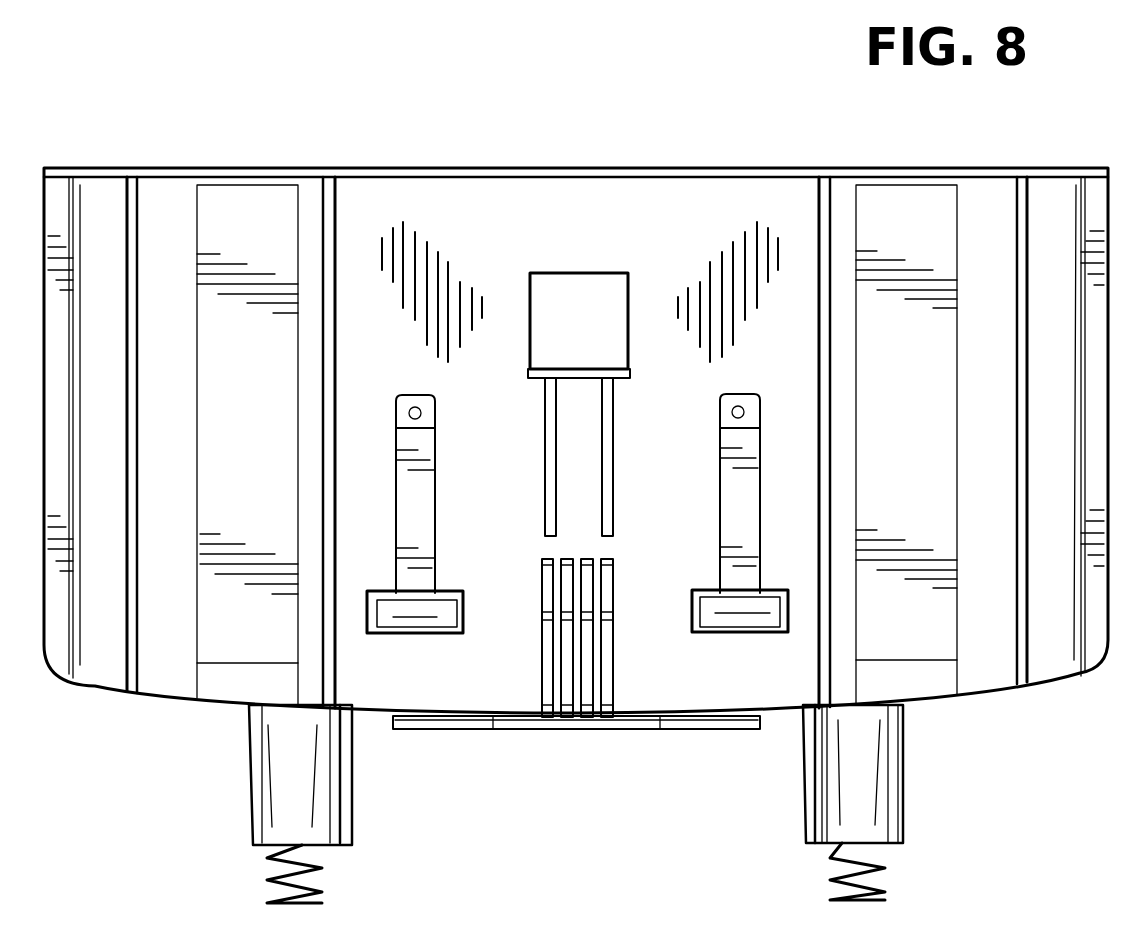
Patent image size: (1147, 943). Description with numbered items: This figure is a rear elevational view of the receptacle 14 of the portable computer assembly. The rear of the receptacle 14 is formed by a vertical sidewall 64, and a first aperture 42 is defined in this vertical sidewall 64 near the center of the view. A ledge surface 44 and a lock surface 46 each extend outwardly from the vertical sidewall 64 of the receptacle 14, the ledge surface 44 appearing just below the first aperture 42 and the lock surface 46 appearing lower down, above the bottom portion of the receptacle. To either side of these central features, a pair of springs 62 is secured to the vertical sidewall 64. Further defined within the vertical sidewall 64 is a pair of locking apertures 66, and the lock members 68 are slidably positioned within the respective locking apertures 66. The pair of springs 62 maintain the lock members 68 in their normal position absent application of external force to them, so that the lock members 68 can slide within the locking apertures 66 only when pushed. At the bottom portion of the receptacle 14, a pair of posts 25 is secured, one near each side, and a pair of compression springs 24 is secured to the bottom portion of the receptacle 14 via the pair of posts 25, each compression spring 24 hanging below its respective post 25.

The receptacle 14 is at (417, 168).
The vertical sidewall 64 is at (603, 207).
The first aperture 42 is at (590, 275).
The ledge surface 44 is at (580, 382).
The lock surface 46 is at (607, 645).
The springs 62 is at (420, 508).
The lock members 68 is at (442, 608).
The locking apertures 66 is at (375, 610).
The posts 25 is at (267, 778).
The compression springs 24 is at (272, 892).